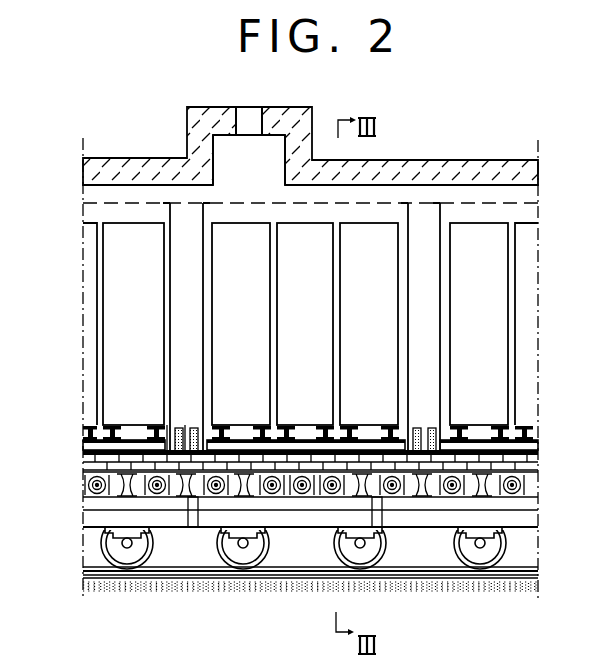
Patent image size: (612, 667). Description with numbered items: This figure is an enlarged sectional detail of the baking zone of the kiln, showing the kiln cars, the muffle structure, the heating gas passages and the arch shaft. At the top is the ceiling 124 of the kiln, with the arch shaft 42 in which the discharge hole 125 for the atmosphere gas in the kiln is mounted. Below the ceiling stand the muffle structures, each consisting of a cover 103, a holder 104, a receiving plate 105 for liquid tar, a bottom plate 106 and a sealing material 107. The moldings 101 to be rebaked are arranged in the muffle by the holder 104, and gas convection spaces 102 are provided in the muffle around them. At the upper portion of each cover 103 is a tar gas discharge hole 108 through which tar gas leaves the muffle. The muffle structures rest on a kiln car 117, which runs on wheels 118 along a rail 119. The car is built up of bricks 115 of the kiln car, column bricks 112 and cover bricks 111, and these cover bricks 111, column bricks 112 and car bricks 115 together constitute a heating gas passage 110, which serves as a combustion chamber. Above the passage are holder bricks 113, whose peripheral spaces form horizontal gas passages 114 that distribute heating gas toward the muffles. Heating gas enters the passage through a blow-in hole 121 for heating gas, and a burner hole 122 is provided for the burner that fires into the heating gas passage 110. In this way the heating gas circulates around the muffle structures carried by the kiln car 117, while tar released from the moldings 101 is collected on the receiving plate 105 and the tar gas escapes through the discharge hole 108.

The arch shaft 42 is at (225, 158).
The discharge hole for the atmosphere gas 125 is at (247, 115).
The tar gas discharge hole 108 is at (385, 206).
The ceiling 124 is at (492, 168).
The moldings to be rebaked 101 is at (546, 266).
The gas convection spaces in muffle 102 is at (442, 348).
The cover 103 is at (410, 385).
The holder 104 is at (242, 447).
The receiving plate for liquid tar 105 is at (168, 428).
The bottom plate 106 is at (180, 436).
The sealing material 107 is at (418, 428).
The horizontal gas passages 114 is at (490, 437).
The holder bricks 113 is at (368, 458).
The cover bricks 111 is at (522, 466).
The heating gas passage 110 is at (245, 497).
The burner hole 122 is at (302, 494).
The blow-in hole for heating gas 121 is at (452, 497).
The column bricks 112 is at (406, 497).
The bricks of the kiln car 115 is at (525, 510).
The kiln car 117 is at (525, 527).
The wheel 118 is at (105, 545).
The rail 119 is at (90, 572).